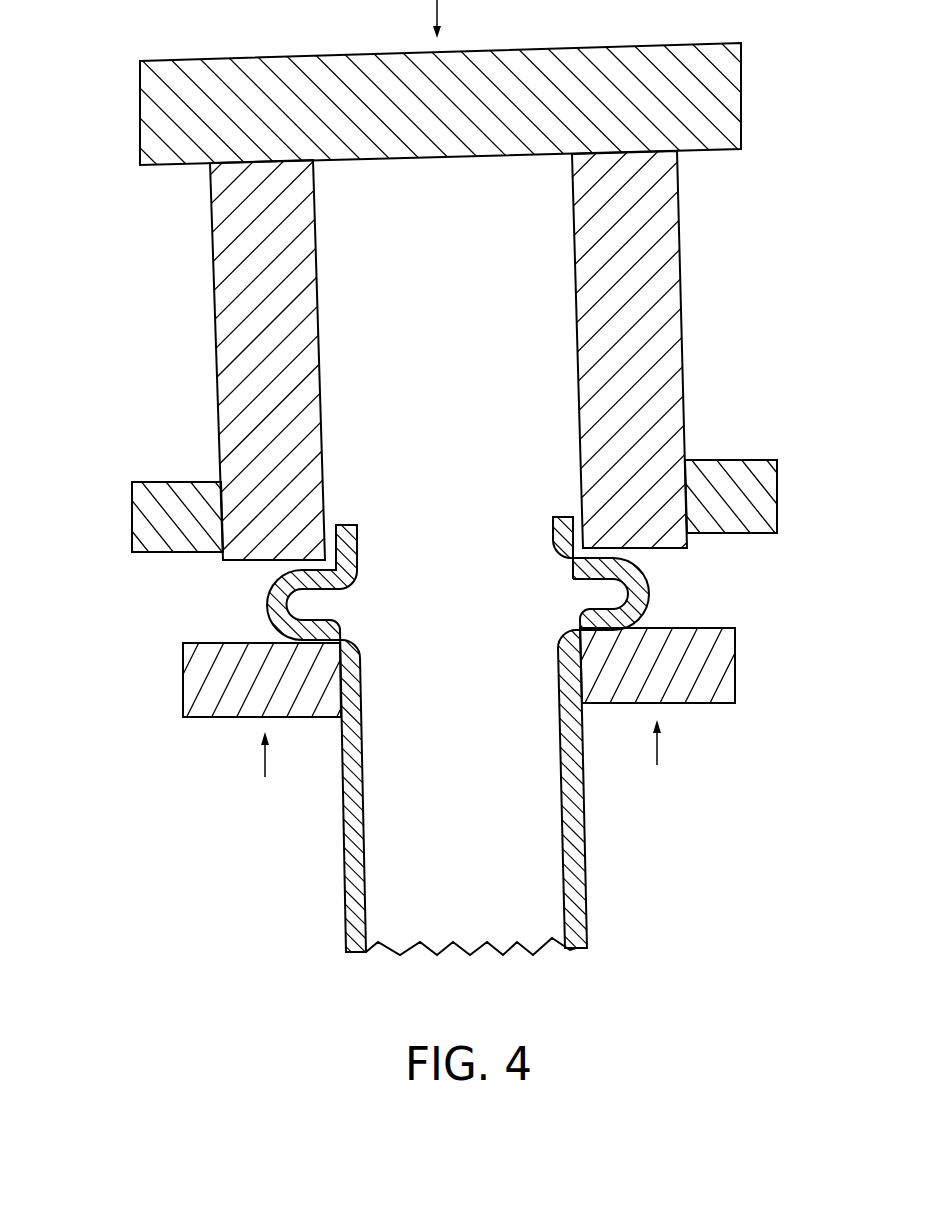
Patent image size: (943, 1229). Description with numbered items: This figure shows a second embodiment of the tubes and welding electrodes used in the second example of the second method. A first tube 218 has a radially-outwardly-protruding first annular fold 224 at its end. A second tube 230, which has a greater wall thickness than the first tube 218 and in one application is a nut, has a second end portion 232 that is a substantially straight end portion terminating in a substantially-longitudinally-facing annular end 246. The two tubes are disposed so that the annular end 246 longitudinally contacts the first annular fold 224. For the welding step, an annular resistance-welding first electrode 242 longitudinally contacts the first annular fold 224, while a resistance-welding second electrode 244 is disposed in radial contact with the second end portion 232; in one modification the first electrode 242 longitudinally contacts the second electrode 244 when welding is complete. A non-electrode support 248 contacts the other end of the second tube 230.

The first tube 218 is at (471, 736).
The first annular fold 224 is at (650, 593).
The second tube 230 is at (471, 333).
The second end portion 232 is at (325, 492).
The first electrode 242 is at (725, 668).
The second electrode 244 is at (138, 518).
The annular end 246 is at (254, 565).
The non-electrode support 248 is at (733, 100).